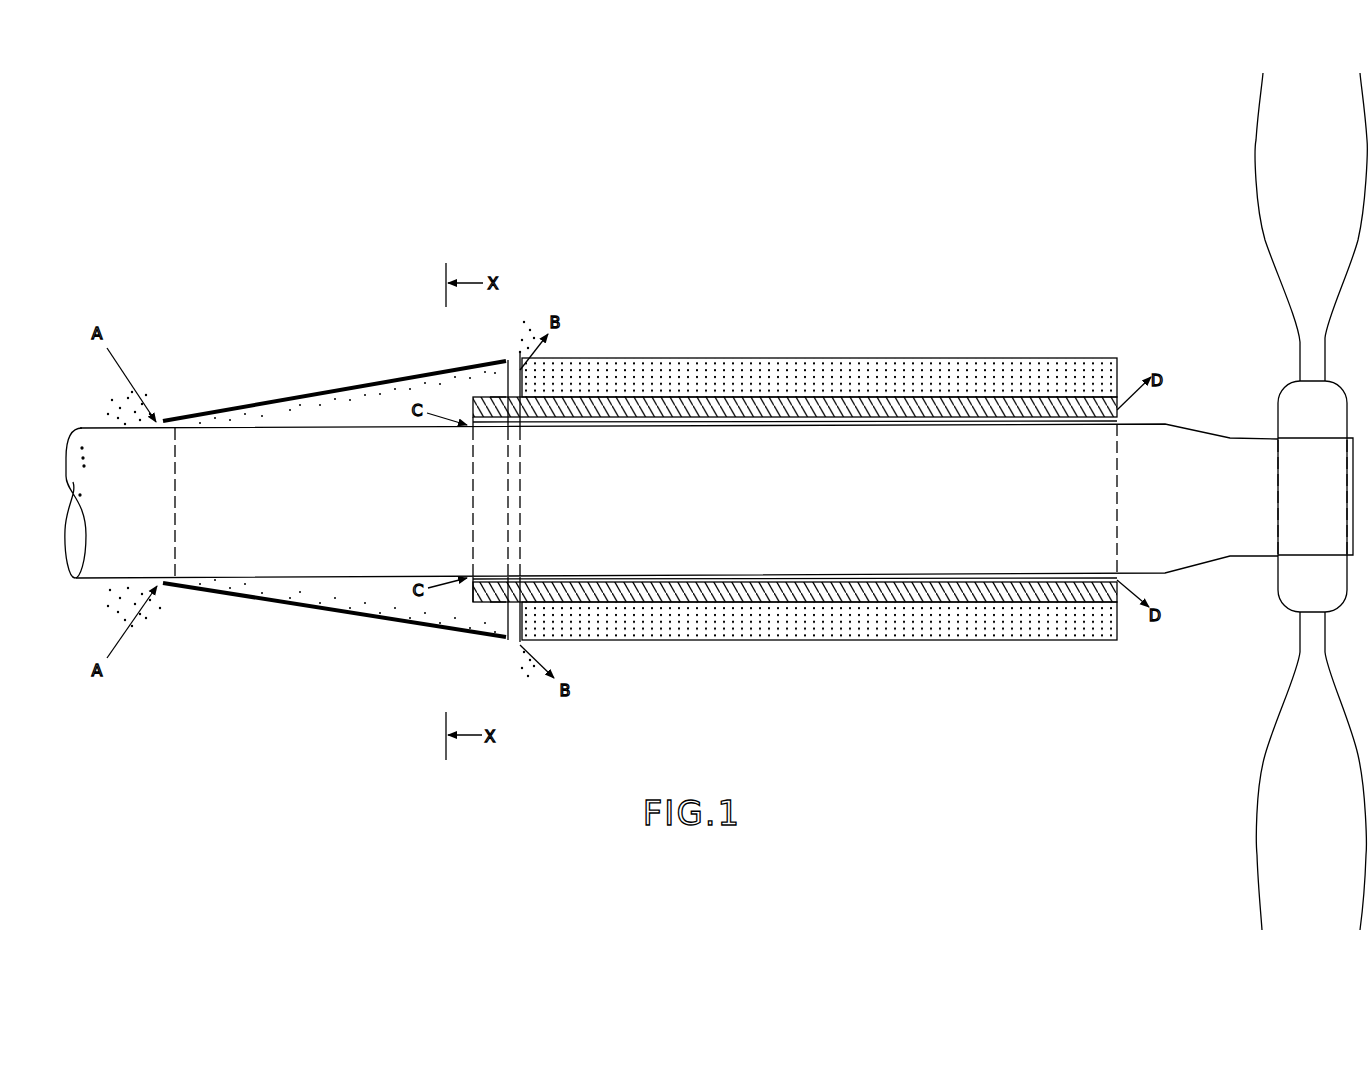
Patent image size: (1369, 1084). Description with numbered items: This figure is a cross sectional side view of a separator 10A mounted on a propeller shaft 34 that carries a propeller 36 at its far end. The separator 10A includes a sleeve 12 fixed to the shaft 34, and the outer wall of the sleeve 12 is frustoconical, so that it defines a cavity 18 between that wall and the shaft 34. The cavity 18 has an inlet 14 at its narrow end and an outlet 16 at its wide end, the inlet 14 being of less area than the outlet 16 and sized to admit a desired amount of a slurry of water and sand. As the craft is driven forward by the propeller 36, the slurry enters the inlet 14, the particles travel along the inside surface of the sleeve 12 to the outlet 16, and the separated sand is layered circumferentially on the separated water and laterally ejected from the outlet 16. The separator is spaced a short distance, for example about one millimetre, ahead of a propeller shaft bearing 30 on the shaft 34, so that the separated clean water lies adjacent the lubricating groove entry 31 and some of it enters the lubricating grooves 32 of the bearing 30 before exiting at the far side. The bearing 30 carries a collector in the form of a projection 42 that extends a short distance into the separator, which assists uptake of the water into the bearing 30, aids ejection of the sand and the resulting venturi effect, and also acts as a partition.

The separator 10A is at (193, 302).
The sleeve 12 is at (342, 388).
The inlet 14 is at (165, 420).
The outlet 16 is at (517, 378).
The cavity 18 is at (345, 592).
The propeller shaft bearing 30 is at (847, 652).
The lubricating groove entry 31 is at (493, 423).
The lubricating grooves 32 is at (742, 422).
The propeller shaft 34 is at (300, 500).
The propeller 36 is at (1257, 172).
The projection 42 is at (472, 590).